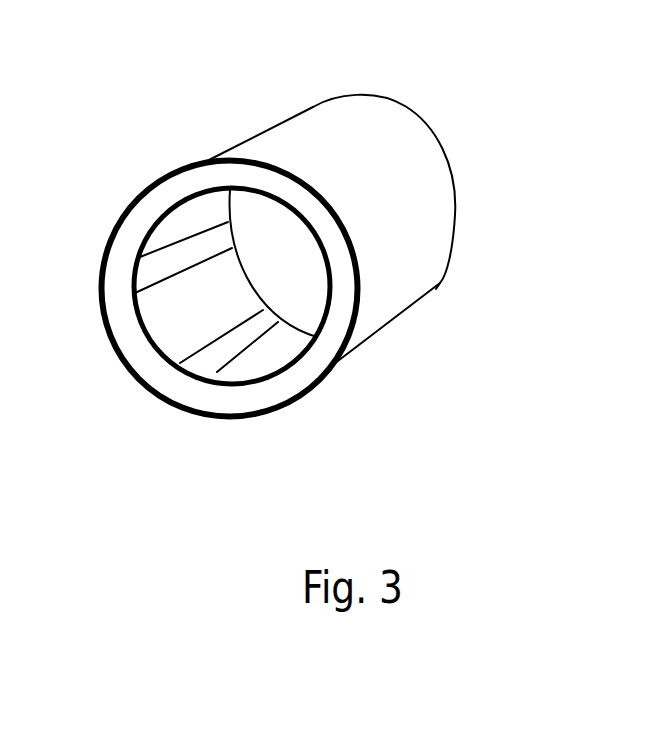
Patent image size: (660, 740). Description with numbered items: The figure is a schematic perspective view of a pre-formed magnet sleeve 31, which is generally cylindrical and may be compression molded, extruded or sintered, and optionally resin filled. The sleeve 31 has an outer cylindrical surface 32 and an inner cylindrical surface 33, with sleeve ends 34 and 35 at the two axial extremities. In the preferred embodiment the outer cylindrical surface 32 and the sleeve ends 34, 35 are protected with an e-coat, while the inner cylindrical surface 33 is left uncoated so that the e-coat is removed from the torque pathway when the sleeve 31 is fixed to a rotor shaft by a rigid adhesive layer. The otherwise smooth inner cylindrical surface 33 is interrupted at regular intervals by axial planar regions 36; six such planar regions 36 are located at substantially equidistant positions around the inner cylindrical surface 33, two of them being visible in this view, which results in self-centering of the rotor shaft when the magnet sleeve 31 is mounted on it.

The pre-formed magnet sleeve 31 is at (540, 257).
The outer cylindrical surface 32 is at (290, 137).
The inner cylindrical surface 33 is at (160, 333).
The sleeve end 34 is at (124, 267).
The sleeve end 35 is at (442, 150).
The axial planar regions 36 is at (173, 262).